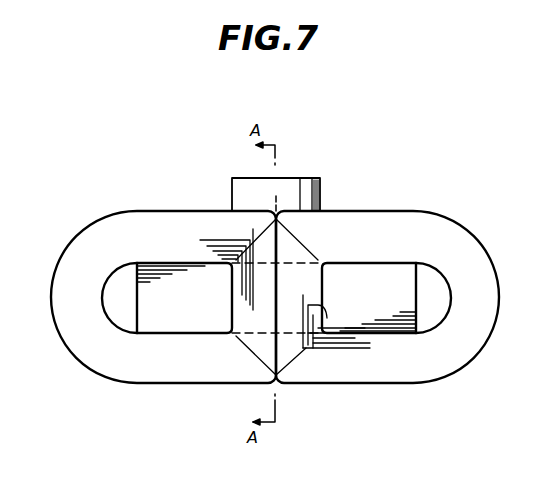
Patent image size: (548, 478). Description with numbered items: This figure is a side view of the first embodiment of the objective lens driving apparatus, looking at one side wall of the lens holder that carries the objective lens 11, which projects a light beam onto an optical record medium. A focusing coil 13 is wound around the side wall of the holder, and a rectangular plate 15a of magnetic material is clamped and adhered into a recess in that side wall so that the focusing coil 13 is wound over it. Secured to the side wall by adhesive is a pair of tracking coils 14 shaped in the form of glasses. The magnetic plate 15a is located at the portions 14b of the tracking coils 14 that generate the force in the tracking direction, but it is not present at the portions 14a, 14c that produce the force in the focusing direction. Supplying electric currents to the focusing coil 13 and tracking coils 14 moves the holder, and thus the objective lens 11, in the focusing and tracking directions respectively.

The objective lens 11 is at (306, 185).
The focusing coil 13 is at (397, 318).
The tracking coils 14 is at (108, 208).
The portion of tracking coil 14a is at (217, 224).
The portion of tracking coil 14b is at (243, 300).
The portion of tracking coil 14c is at (208, 373).
The rectangular plate 15a is at (327, 243).